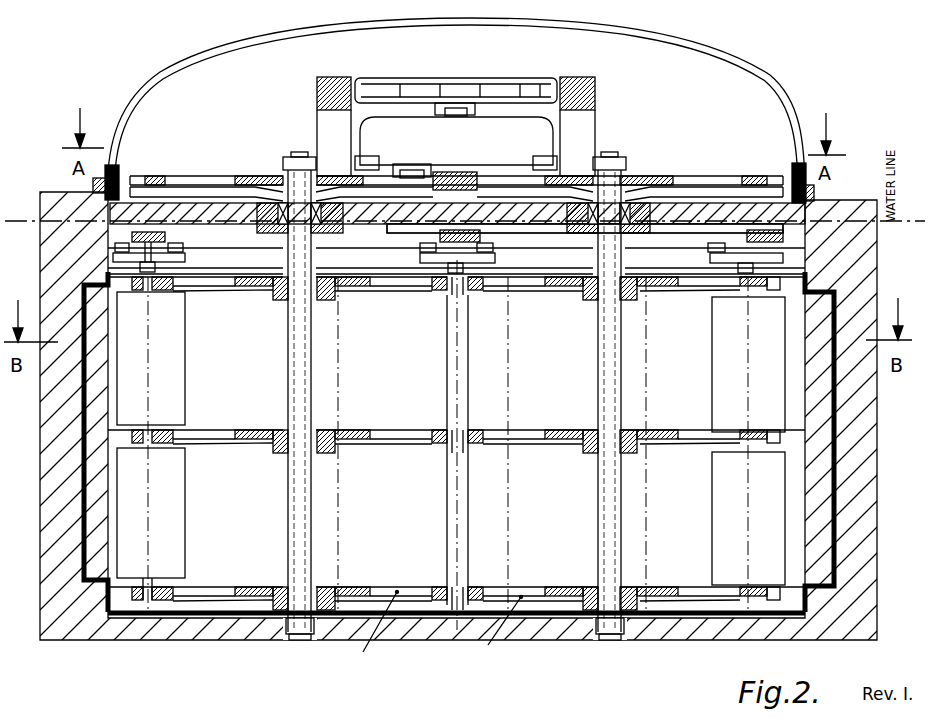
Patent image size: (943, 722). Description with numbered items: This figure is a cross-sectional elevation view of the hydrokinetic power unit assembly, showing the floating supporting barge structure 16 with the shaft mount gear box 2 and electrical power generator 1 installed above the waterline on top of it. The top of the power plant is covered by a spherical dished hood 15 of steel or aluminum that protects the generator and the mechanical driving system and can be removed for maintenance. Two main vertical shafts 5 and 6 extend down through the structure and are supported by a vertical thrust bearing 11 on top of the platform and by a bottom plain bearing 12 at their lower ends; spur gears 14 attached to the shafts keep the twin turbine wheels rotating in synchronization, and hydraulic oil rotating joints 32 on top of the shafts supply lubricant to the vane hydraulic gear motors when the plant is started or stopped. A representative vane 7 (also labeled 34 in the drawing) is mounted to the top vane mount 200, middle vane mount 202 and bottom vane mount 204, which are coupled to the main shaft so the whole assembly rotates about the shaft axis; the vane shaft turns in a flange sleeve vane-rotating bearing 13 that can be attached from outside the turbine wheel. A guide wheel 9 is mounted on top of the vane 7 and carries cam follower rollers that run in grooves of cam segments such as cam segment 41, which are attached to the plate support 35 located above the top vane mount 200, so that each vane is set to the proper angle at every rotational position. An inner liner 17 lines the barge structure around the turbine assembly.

The electrical power generator 1 is at (415, 95).
The shaft mount gear box 2 is at (474, 145).
The main vertical shaft 5 is at (303, 365).
The main vertical shaft 6 is at (614, 365).
The vane 7 is at (166, 528).
The roller drum 34 is at (199, 513).
The guide wheel 9 is at (165, 257).
The vertical thrust bearing 11 is at (625, 202).
The bottom plain bearing 12 is at (598, 640).
The flange sleeve vane-rotating bearing 13 is at (163, 580).
The spur gear 14 is at (255, 178).
The spherical dished hood 15 is at (180, 72).
The floating supporting barge structure 16 is at (840, 218).
The inner liner 17 is at (80, 505).
The hydraulic oil rotating joint 32 is at (292, 163).
The plate support 35 is at (712, 228).
The cam segment 41 is at (133, 231).
The top vane mount 200 is at (287, 283).
The middle vane mount 202 is at (275, 432).
The bottom vane mount 204 is at (262, 590).